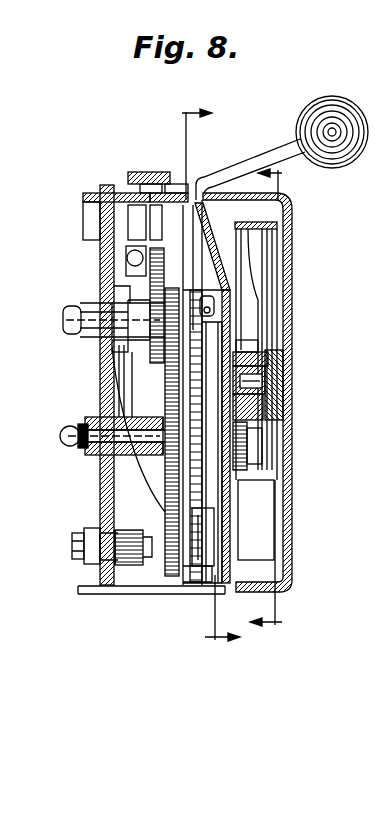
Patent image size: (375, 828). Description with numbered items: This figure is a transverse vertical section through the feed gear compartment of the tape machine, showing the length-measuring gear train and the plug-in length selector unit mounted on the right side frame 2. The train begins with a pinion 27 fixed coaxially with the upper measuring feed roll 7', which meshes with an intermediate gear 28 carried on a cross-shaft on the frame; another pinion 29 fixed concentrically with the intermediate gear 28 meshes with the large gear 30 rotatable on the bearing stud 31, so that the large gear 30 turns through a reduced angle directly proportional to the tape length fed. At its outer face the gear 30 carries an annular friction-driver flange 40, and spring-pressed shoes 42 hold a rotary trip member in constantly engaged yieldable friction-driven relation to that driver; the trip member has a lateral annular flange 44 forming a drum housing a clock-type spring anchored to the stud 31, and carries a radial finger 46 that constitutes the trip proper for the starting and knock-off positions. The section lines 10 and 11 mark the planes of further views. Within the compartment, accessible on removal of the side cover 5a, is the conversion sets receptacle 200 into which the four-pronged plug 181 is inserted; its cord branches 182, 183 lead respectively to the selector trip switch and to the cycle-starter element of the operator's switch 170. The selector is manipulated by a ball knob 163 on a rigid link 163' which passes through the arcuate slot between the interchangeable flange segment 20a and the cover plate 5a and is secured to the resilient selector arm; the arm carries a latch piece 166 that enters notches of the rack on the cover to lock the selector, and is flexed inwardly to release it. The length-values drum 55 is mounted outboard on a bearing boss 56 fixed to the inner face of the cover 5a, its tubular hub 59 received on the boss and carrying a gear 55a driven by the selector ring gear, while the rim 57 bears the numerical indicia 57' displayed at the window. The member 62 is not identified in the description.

The right side frame 2 is at (92, 193).
The drive shaft 7' is at (104, 307).
The section line 10- 10 is at (226, 385).
The section line 11- 11 is at (283, 403).
The interchangeable flange segment 20a is at (174, 193).
The pinion 27 is at (112, 350).
The intermediate gear 28 is at (160, 246).
The pinion 29 is at (128, 264).
The large gear 30 is at (168, 386).
The bearing stud 31 is at (100, 448).
The friction-driver flange 40 is at (253, 543).
The spring-pressed shoes 42 is at (252, 523).
The lateral annular flange 44 is at (163, 485).
The radial finger 46 is at (198, 578).
The length-values drum 55 is at (284, 240).
The compartment side cover plate 5a is at (288, 292).
The gear 55a is at (264, 432).
The bearing boss 56 is at (268, 388).
The barrel or rim portion 57 is at (256, 327).
The numerical indicia 57' is at (282, 520).
The tubular hub 59 is at (252, 350).
The spring 62 is at (254, 266).
The grip knob 163 is at (332, 117).
The rigid link 163' is at (250, 169).
The latch piece 166 is at (131, 178).
The operator's switch 170 is at (147, 168).
The four-pronged plug 181 is at (130, 568).
The cord branch 182 is at (119, 382).
The cord branch 183 is at (134, 396).
The conversion sets receptacle 200 is at (82, 562).